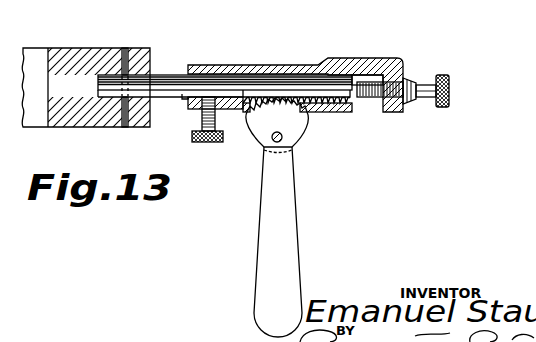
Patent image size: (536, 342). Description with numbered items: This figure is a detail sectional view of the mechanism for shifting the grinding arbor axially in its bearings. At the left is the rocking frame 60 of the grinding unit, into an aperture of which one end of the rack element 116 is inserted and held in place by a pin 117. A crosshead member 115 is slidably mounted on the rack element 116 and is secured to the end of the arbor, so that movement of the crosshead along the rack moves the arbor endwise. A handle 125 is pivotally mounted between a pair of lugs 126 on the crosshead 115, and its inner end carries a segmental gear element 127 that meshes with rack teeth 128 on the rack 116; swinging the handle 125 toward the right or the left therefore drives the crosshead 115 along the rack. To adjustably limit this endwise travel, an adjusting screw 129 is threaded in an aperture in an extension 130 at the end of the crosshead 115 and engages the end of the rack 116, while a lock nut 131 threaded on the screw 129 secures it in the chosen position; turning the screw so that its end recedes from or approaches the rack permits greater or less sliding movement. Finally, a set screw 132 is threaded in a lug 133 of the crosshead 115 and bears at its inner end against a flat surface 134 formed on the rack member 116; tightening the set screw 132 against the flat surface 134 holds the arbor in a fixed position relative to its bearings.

The rocking frame 60 is at (70, 48).
The pin 117 is at (128, 48).
The rack element 116 is at (164, 75).
The flat surface 134 is at (184, 95).
The crosshead member 115 is at (314, 64).
The lug 133 is at (196, 111).
The set screw 132 is at (207, 141).
The segmental gear element 127 is at (307, 113).
The lugs 126 is at (296, 128).
The handle 125 is at (295, 209).
The rack teeth 128 is at (345, 82).
The lock nut 131 is at (409, 77).
The adjusting screw 129 is at (445, 74).
The extension 130 is at (398, 112).